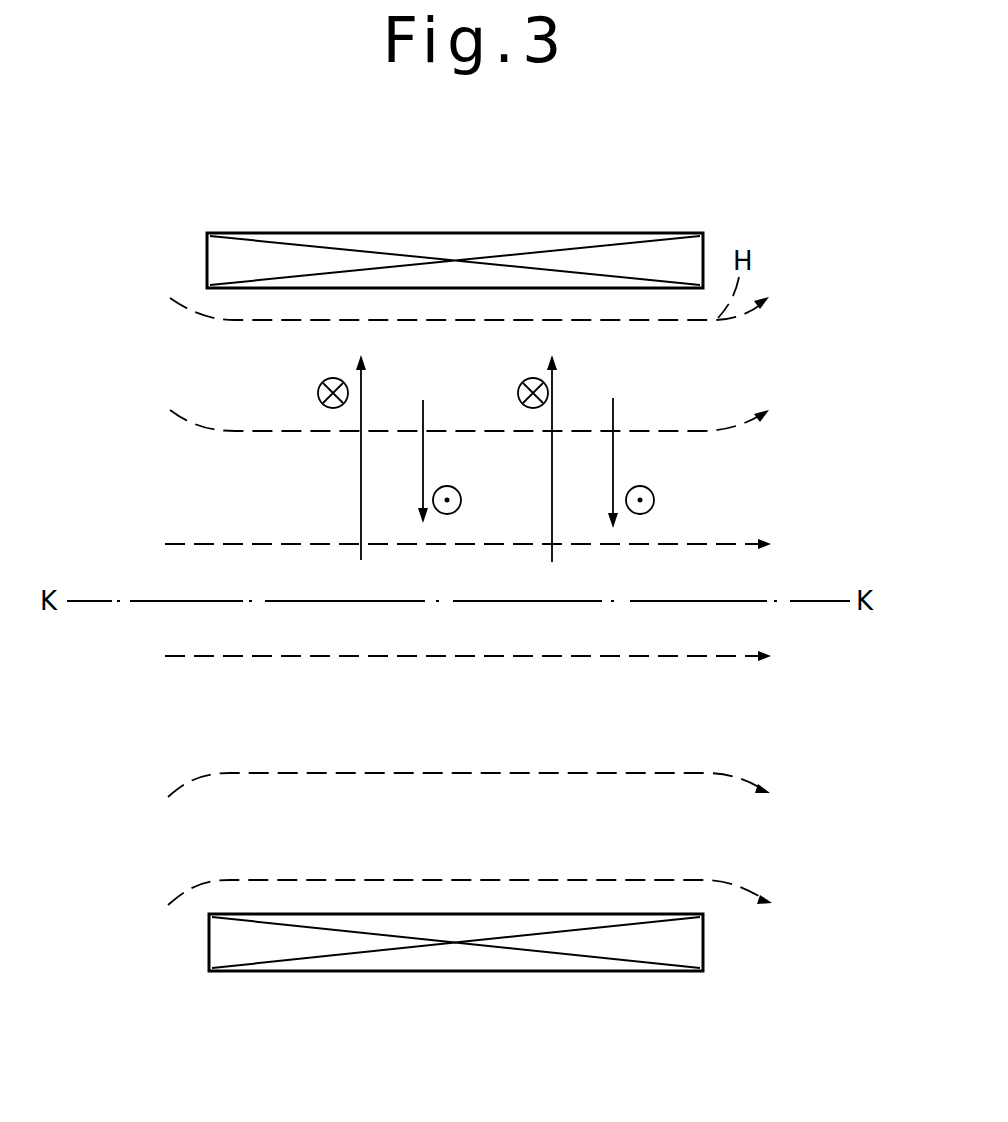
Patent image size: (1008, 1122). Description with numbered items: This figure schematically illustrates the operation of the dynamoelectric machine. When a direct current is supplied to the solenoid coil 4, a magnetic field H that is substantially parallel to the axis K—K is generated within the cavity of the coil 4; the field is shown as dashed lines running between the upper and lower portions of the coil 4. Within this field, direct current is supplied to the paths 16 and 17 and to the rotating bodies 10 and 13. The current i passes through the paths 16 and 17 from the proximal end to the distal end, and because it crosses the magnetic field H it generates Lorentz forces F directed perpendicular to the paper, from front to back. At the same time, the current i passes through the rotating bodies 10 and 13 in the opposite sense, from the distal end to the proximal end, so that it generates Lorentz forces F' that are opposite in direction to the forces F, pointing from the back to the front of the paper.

The solenoid coil 4 is at (590, 233).
The rotating body 10 is at (424, 404).
The rotating body 13 is at (614, 406).
The path 16 is at (362, 560).
The path 17 is at (553, 562).